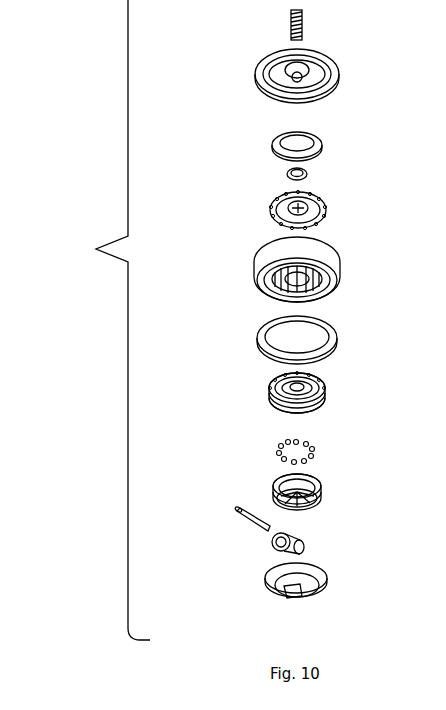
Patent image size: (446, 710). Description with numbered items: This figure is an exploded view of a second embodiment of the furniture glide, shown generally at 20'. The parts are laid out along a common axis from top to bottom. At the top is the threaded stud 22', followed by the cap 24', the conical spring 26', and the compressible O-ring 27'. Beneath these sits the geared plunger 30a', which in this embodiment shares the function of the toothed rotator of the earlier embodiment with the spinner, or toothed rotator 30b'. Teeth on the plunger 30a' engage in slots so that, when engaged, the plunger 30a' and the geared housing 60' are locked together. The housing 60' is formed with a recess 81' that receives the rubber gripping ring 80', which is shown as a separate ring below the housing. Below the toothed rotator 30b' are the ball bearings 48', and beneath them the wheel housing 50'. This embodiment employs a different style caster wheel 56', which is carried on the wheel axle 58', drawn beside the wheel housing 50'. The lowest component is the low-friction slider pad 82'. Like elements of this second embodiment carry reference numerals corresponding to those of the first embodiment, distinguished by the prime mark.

The furniture glide 20' is at (82, 320).
The threaded stud 22' is at (343, 21).
The cap 24' is at (324, 76).
The conical spring 26' is at (330, 143).
The compressible O-ring 27' is at (337, 173).
The geared plunger 30a' is at (333, 209).
The geared housing 60' is at (318, 269).
The recess 81' is at (316, 283).
The rubber gripping ring 80' is at (321, 340).
The toothed rotator 30b' is at (333, 393).
The ball bearings 48' is at (333, 446).
The wheel housing 50' is at (330, 495).
The wheel axle 58' is at (225, 522).
The caster wheel 56' is at (331, 549).
The low-friction slider pad 82' is at (321, 590).